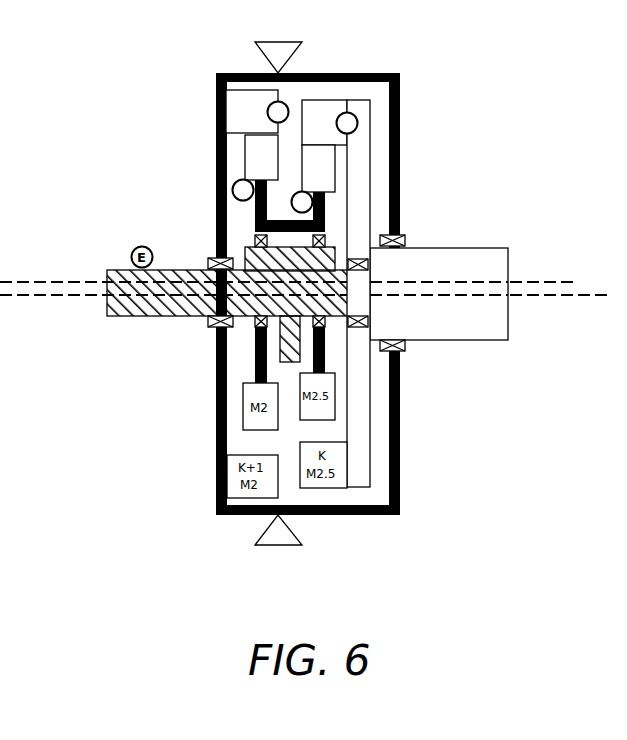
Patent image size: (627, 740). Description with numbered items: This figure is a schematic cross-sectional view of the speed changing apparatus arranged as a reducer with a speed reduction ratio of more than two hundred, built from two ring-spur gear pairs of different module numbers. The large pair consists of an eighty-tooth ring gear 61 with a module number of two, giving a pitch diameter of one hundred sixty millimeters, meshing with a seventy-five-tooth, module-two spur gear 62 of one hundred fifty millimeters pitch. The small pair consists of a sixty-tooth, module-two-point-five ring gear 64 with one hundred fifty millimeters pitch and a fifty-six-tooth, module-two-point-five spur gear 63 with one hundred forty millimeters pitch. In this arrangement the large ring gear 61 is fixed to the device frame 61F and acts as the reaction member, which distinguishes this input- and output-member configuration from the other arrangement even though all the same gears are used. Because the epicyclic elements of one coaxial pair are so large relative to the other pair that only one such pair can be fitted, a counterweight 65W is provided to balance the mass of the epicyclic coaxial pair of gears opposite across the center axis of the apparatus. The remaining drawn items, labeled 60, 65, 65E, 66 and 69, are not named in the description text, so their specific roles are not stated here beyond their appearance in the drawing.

The transmission 60 is at (563, 296).
The ring gear 61 is at (228, 110).
The device frame 61F is at (232, 73).
The spur gear 62 is at (245, 157).
The spur gear 63 is at (335, 167).
The ring gear 64 is at (327, 98).
The shaft 65 is at (131, 317).
The shaft end portion 65E is at (240, 250).
The counterweight 65W is at (283, 355).
The motor 66 is at (473, 327).
The rotation axis 69 is at (540, 282).